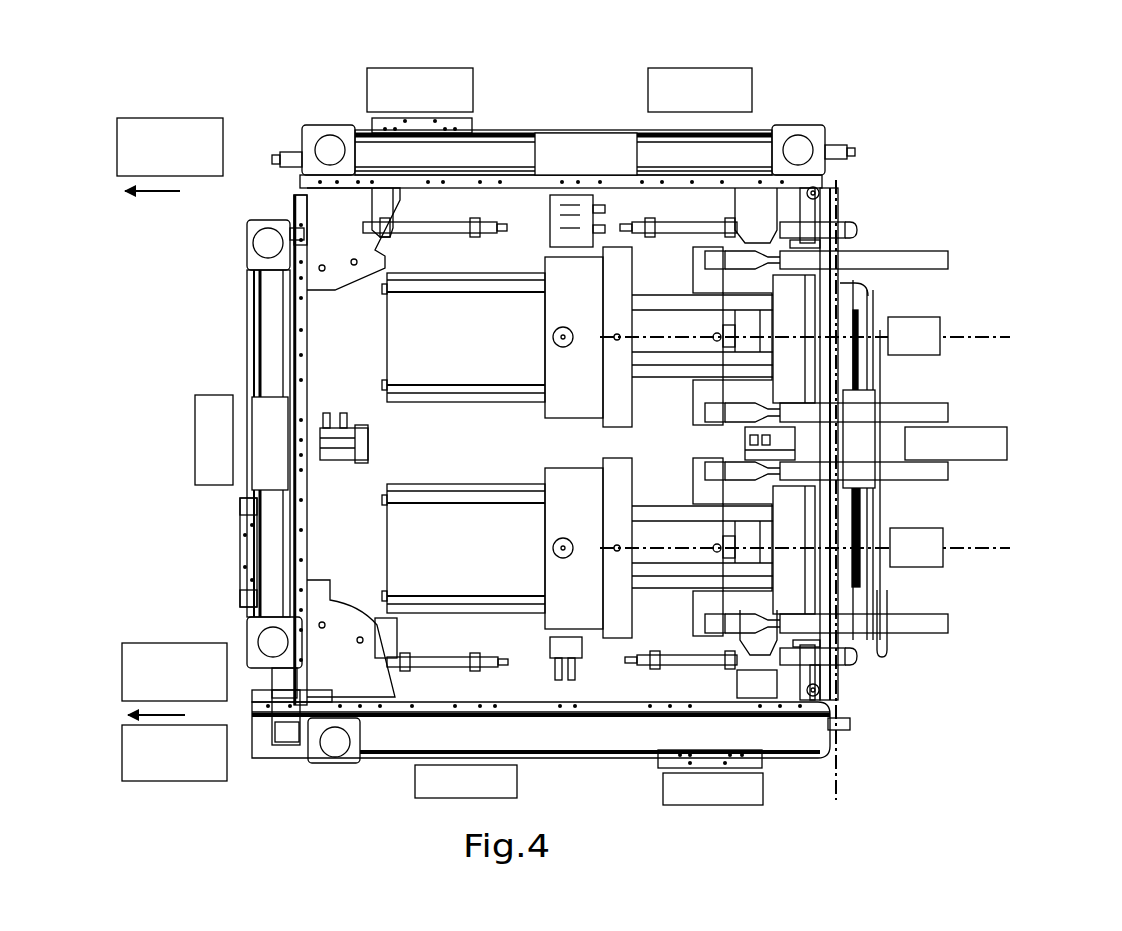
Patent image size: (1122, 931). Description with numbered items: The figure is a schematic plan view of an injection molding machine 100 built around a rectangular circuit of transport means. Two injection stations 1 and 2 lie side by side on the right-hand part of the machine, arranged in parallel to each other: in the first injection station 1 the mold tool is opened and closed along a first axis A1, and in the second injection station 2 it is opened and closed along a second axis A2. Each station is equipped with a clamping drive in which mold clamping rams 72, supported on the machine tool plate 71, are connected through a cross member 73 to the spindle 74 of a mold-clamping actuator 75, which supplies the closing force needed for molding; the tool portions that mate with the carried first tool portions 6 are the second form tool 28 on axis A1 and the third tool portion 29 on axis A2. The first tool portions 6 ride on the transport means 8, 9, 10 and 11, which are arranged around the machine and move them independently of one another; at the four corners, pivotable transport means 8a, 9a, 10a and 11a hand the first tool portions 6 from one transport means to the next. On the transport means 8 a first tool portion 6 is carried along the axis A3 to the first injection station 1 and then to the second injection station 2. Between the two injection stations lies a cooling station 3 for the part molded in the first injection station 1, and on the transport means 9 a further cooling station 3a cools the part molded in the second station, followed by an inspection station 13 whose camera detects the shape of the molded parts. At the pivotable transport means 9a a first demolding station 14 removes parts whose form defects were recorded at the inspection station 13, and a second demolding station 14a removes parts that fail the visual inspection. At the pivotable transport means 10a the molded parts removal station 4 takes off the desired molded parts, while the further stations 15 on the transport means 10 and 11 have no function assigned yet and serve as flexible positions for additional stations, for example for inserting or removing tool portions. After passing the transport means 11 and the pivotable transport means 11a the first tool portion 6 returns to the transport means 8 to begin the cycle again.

The injection molding machine 100 is at (925, 100).
The molded parts removal station 4 is at (176, 170).
The further station 15 is at (429, 107).
The first tool portion 6 is at (470, 132).
The transport means 11 is at (596, 171).
The pivotable transport means 11a is at (828, 192).
The transport means 10 is at (281, 453).
The pivotable transport means 10a is at (302, 192).
The transport means 8 is at (871, 452).
The pivotable transport means 8a is at (832, 690).
The transport means 9 is at (556, 758).
The pivotable transport means 9a is at (284, 735).
The inspection station 13 is at (480, 796).
The first demolding station 14 is at (182, 689).
The second demolding station 14a is at (184, 771).
The cooling station 3 is at (985, 437).
The further cooling station 3a is at (721, 803).
The first injection station 1 is at (975, 287).
The second injection station 2 is at (965, 607).
The machine tool plate 71 is at (800, 303).
The mold clamping rams 72 is at (936, 251).
The cross member 73 is at (697, 273).
The spindle 74 is at (661, 360).
The mold-clamping actuator 75 is at (503, 396).
The second form tool 28 is at (932, 345).
The third tool portion 29 is at (927, 558).
The first axis A1 is at (990, 334).
The second axis A2 is at (993, 546).
The axis A3 is at (840, 752).